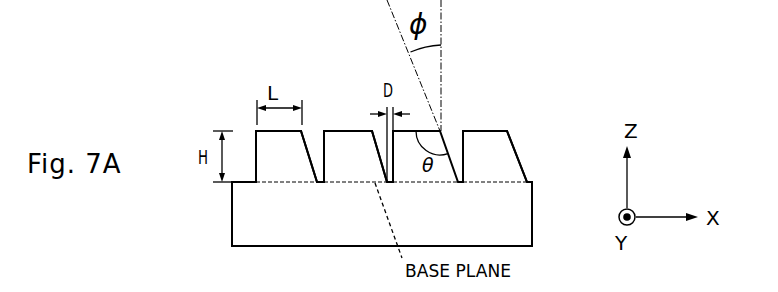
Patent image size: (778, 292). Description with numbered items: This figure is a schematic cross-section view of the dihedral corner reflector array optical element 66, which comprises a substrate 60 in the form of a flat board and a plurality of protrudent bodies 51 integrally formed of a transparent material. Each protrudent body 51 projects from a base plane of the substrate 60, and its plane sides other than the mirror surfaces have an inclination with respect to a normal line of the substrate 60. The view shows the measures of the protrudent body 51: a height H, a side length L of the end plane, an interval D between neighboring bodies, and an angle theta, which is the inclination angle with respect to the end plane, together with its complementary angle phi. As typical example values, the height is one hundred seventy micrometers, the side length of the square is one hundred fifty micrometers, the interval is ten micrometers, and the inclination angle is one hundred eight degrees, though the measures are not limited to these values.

The substrate 60 is at (242, 204).
The protrudent body 51 is at (511, 136).
The dihedral corner reflector array optical element 66 is at (207, 90).